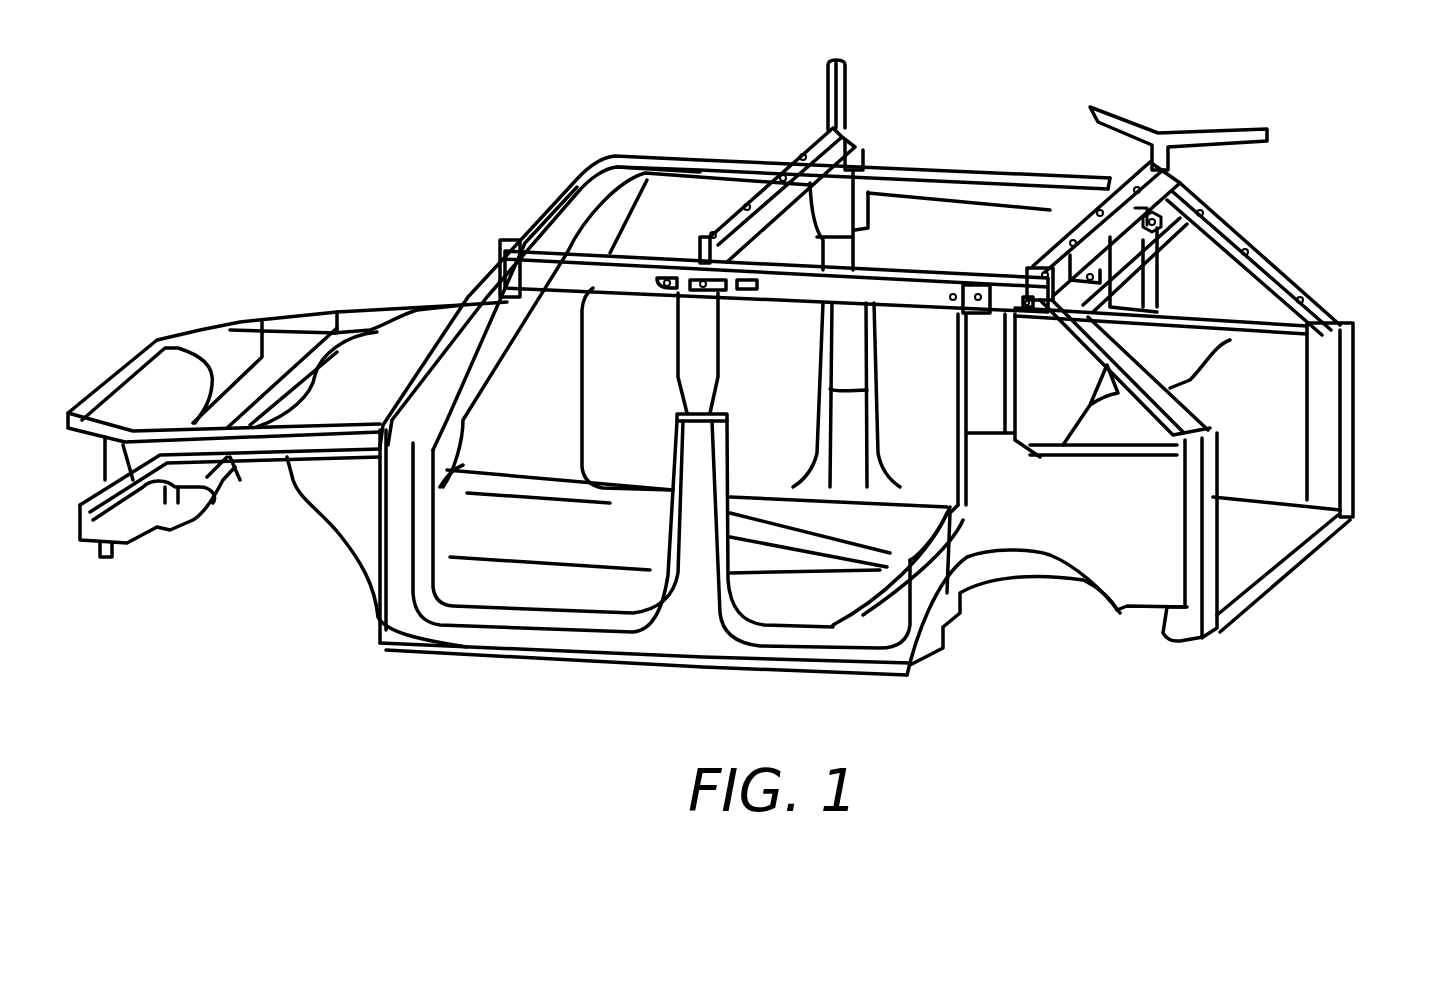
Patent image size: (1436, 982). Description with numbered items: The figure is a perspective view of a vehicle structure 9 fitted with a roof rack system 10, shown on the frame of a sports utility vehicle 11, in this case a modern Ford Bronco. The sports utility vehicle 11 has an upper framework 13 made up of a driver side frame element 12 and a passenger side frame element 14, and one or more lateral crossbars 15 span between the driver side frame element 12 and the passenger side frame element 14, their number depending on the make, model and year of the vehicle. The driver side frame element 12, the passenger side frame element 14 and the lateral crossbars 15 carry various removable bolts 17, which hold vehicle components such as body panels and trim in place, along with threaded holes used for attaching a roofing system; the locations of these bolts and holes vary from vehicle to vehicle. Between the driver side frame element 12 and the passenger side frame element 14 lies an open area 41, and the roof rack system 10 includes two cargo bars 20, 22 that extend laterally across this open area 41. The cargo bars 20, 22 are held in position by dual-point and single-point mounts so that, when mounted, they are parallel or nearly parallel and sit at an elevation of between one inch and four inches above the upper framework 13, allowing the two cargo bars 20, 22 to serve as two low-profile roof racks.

The vehicle structure 9 is at (470, 113).
The roof rack system 10 is at (1220, 180).
The sports utility vehicle 11 is at (1357, 350).
The driver side frame element 12 is at (618, 290).
The upper framework 13 is at (1247, 243).
The passenger side frame element 14 is at (693, 173).
The lateral crossbar 15 is at (1133, 243).
The removable bolt 17 is at (953, 297).
The cargo bar 20 is at (790, 160).
The cargo bar 22 is at (1110, 183).
The open area 41 is at (922, 248).